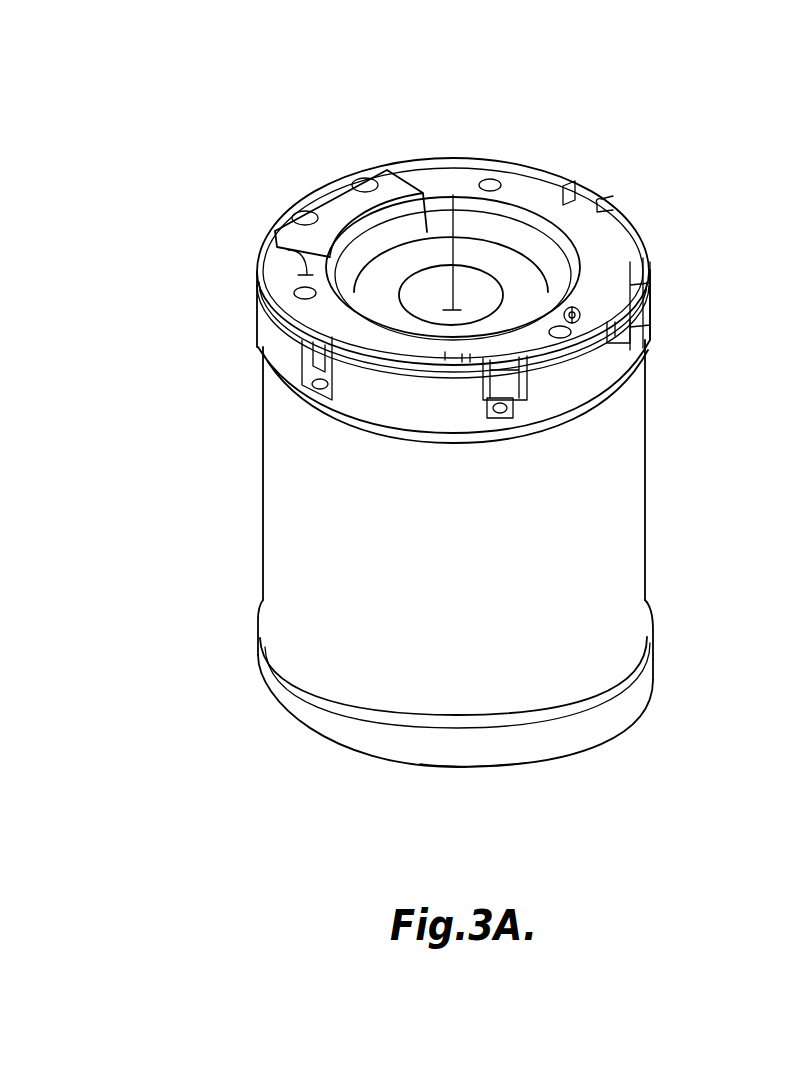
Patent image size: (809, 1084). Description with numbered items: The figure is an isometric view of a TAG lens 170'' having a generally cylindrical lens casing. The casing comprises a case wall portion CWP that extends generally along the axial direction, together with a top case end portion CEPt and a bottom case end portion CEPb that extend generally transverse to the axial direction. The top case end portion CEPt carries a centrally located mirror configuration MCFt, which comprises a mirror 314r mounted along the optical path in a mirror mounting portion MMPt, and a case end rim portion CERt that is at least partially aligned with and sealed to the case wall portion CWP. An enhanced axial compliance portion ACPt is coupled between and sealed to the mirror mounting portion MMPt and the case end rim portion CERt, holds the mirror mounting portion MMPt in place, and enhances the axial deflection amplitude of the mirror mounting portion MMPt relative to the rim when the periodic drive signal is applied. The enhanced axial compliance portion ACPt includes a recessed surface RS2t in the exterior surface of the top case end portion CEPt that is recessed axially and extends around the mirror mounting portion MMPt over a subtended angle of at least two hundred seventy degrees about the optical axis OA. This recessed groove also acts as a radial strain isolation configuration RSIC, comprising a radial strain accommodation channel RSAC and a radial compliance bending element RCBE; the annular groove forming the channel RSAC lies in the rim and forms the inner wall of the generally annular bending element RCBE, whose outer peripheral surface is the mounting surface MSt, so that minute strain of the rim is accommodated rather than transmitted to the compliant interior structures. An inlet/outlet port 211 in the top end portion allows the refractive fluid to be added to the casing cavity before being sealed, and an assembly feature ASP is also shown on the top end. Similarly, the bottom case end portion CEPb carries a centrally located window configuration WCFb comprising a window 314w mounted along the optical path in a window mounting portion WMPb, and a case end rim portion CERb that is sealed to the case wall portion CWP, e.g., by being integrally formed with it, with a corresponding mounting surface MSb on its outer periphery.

The TAG lens 170'' is at (497, 211).
The mirror configuration MCFt is at (522, 101).
The mirror 314r is at (508, 278).
The mirror mounting portion MMPt is at (522, 270).
The enhanced axial compliance portion ACPt is at (548, 258).
The case end rim portion CERt is at (585, 190).
The recessed surface RS2t is at (555, 352).
The inlet/outlet port 211 is at (580, 307).
The top case end portion CEPt is at (652, 267).
The assembly support plate ASP is at (283, 238).
The optical axis OA is at (447, 310).
The mounting surface MSt is at (373, 390).
The radial strain isolation configuration RSIC is at (360, 551).
The radial strain accommodation channel RSAC is at (456, 362).
The radial compliance bending element RCBE is at (469, 363).
The case wall portion CWP is at (655, 355).
The bottom case end portion CEPb is at (658, 612).
The case end rim portion CERb is at (583, 743).
The mounting surface MSb is at (330, 714).
The window 314w is at (458, 781).
The window mounting portion WMPb is at (518, 779).
The window configuration WCFb is at (567, 818).